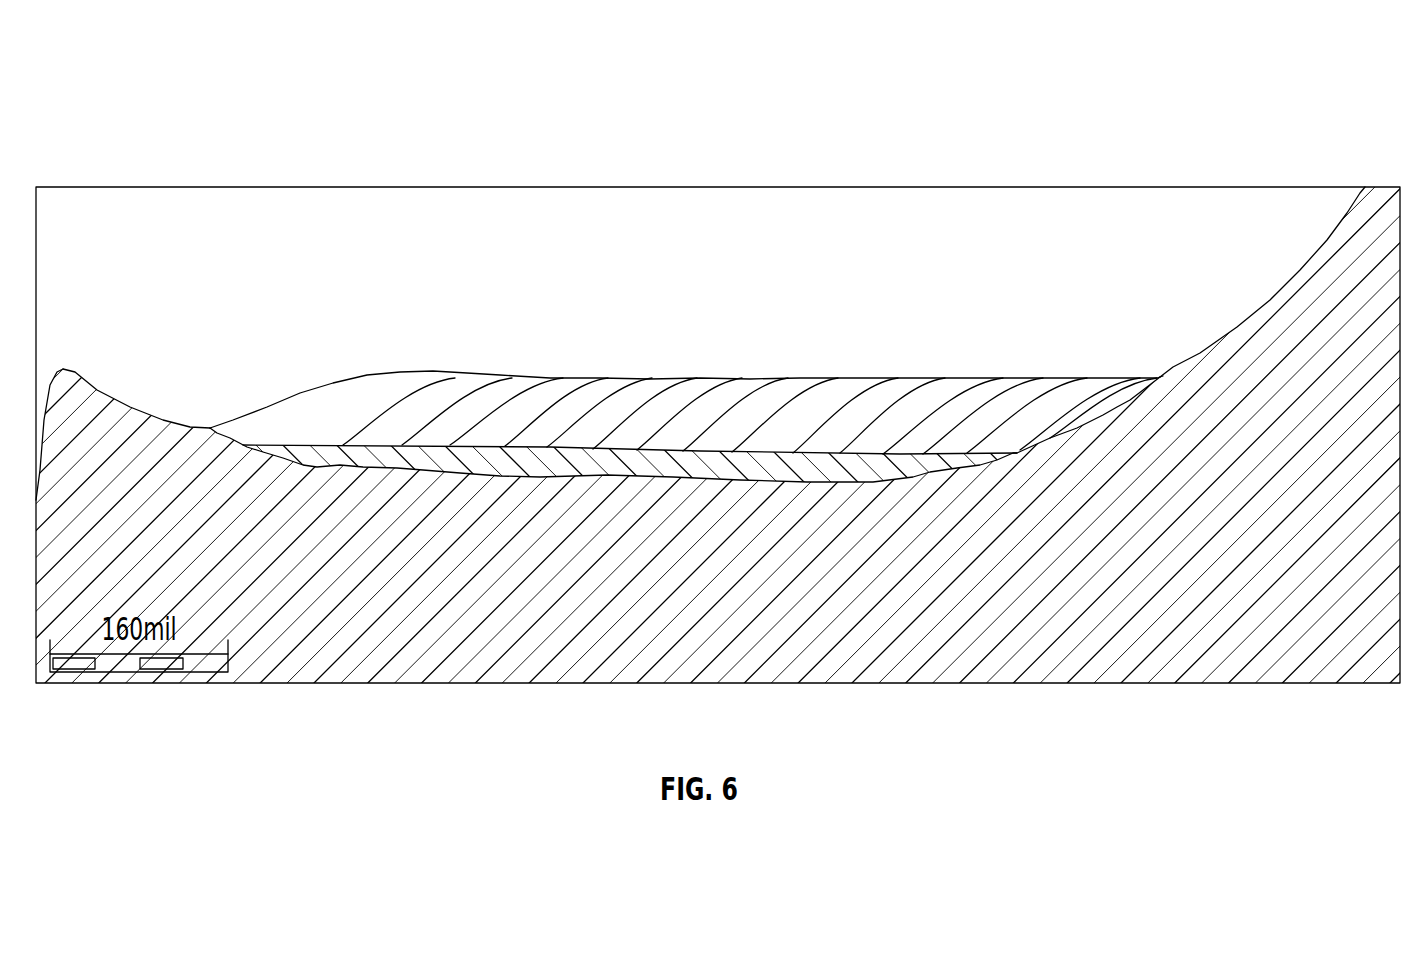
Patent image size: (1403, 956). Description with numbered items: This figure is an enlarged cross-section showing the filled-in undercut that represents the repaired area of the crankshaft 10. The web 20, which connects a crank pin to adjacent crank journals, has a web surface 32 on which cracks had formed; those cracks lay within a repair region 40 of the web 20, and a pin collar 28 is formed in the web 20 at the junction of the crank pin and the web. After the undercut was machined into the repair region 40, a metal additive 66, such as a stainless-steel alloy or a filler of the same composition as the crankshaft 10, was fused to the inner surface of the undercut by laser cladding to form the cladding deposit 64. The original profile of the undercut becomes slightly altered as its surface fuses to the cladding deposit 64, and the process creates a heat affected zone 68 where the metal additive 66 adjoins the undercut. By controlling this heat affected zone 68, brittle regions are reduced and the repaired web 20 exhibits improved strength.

The crankshaft 10 is at (1207, 96).
The web 20 is at (977, 593).
The pin collar 28 is at (1103, 415).
The web surface 32 is at (158, 420).
The repair region 40 is at (686, 358).
The cladding deposit 64 is at (490, 407).
The metal additive 66 is at (640, 410).
The heat affected zone 68 is at (890, 460).